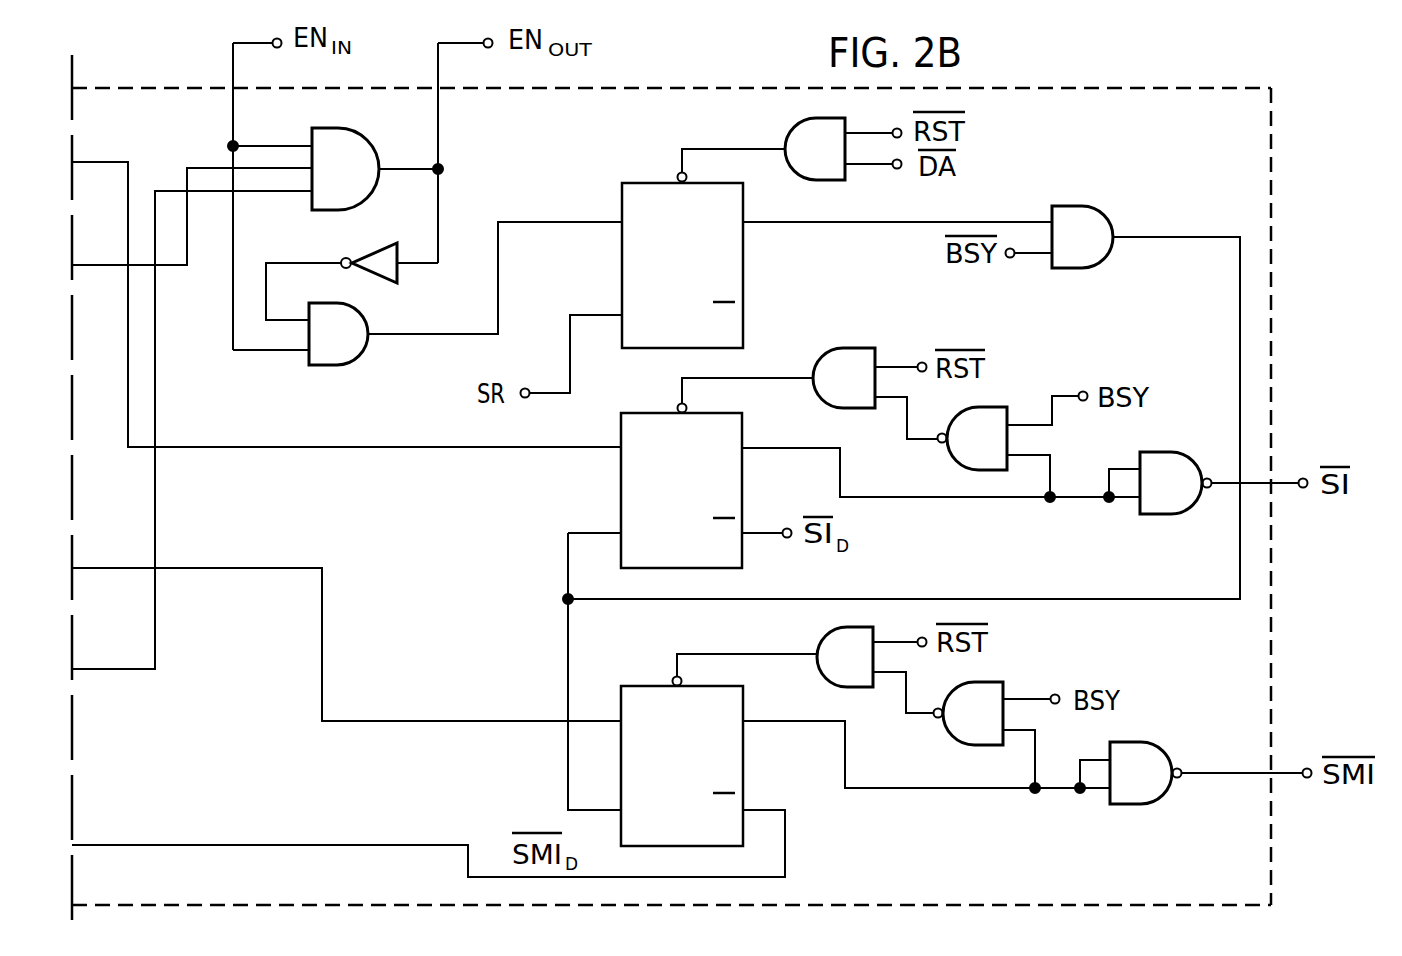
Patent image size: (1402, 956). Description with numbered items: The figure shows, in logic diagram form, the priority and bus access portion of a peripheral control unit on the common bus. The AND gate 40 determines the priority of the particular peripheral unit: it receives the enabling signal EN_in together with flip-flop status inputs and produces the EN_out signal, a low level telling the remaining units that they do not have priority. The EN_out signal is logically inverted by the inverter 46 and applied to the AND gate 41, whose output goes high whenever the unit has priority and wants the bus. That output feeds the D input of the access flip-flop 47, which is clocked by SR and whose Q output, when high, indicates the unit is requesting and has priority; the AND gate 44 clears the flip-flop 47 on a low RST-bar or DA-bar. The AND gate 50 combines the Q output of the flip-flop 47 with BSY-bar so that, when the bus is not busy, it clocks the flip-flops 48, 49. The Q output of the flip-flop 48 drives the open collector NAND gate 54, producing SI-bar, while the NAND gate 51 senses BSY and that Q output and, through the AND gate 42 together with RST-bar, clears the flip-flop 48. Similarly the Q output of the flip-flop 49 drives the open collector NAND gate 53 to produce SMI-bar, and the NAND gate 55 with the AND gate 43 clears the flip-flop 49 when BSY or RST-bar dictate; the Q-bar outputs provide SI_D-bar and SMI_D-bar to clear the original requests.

The AND gate 40 is at (362, 138).
The AND gate 41 is at (328, 366).
The AND gate 42 is at (848, 348).
The AND gate 43 is at (822, 637).
The AND gate 44 is at (795, 124).
The inverter 46 is at (381, 243).
The D-type flip-flop 47 is at (620, 262).
The flip-flop 48 is at (621, 497).
The flip-flop 49 is at (743, 786).
The AND gate 50 is at (1097, 208).
The NAND gate 51 is at (955, 455).
The open collector NAND gate 53 is at (1153, 743).
The open collector NAND gate 54 is at (1170, 453).
The NAND gate 55 is at (958, 735).